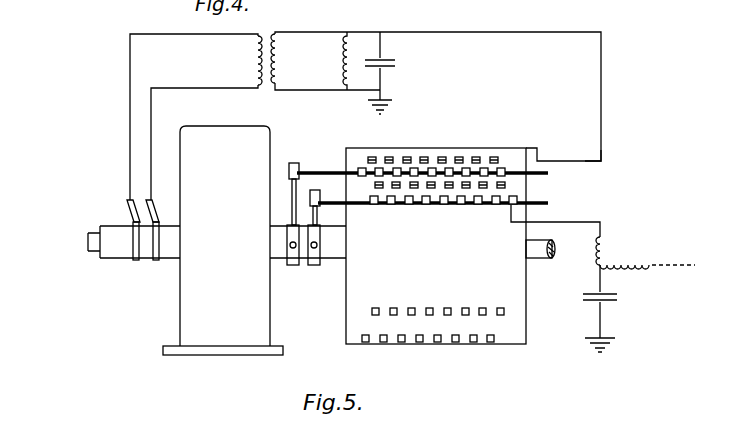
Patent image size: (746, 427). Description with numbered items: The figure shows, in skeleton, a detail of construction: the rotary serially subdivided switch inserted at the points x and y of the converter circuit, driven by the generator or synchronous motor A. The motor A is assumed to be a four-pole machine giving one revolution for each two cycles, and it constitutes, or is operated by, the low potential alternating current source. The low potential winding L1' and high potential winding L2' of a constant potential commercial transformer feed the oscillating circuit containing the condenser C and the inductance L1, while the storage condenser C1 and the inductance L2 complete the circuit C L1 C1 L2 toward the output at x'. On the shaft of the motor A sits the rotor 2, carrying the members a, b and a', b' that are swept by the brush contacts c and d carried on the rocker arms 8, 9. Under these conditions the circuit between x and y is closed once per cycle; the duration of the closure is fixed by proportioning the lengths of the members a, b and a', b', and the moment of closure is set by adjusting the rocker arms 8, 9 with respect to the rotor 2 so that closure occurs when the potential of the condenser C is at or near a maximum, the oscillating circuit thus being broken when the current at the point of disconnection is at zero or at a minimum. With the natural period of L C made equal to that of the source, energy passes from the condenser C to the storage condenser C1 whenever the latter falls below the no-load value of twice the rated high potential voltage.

The generator or synchronous motor A is at (223, 240).
The rotor 2 is at (436, 246).
The rocker arm 8 is at (292, 210).
The rocker arm 9 is at (320, 227).
The switch member a is at (444, 140).
The switch member b is at (475, 186).
The first set of brush contacts c is at (357, 168).
The second set of brush contacts d is at (368, 197).
The switch member a' is at (438, 299).
The switch member b' is at (425, 353).
The circuit point x is at (601, 159).
The terminal x' is at (681, 267).
The circuit point y is at (566, 221).
The condenser C is at (389, 73).
The storage condenser C1 is at (613, 308).
The inductance L1 is at (462, 152).
The inductance L2 is at (628, 255).
The low potential winding L1' is at (249, 60).
The high potential winding L2' is at (289, 58).